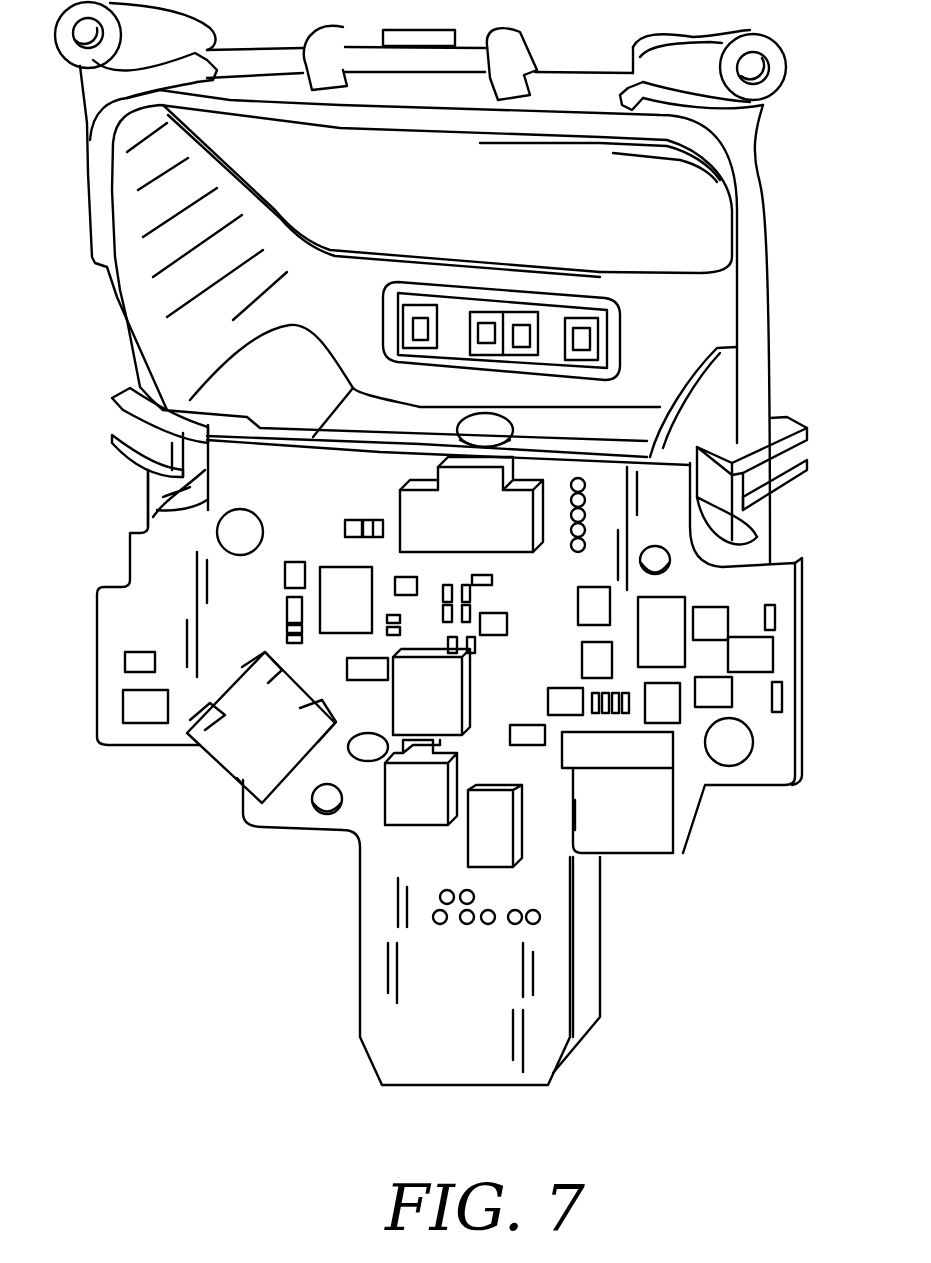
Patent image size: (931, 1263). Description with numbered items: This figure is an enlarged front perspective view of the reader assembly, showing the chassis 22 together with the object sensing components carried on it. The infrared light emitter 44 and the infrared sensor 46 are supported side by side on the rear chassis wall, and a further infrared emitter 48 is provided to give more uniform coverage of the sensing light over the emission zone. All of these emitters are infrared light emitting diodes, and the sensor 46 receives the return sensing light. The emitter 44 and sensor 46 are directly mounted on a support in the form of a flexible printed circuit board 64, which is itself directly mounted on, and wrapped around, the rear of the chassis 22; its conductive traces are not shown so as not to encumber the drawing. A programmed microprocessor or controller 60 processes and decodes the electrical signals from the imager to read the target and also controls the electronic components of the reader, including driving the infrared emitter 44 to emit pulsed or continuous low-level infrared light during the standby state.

The chassis 22 is at (137, 272).
The IR light emitter 44 is at (583, 320).
The IR sensor 46 is at (483, 318).
The IR emitter 48 is at (421, 315).
The controller 60 is at (433, 705).
The flexible printed circuit board 64 is at (653, 833).